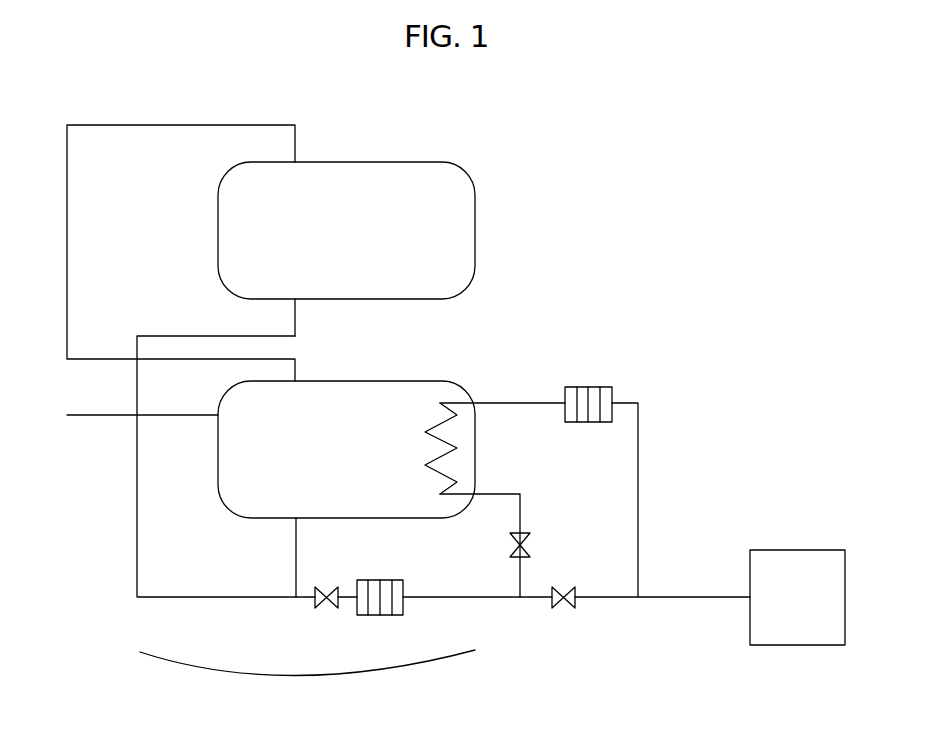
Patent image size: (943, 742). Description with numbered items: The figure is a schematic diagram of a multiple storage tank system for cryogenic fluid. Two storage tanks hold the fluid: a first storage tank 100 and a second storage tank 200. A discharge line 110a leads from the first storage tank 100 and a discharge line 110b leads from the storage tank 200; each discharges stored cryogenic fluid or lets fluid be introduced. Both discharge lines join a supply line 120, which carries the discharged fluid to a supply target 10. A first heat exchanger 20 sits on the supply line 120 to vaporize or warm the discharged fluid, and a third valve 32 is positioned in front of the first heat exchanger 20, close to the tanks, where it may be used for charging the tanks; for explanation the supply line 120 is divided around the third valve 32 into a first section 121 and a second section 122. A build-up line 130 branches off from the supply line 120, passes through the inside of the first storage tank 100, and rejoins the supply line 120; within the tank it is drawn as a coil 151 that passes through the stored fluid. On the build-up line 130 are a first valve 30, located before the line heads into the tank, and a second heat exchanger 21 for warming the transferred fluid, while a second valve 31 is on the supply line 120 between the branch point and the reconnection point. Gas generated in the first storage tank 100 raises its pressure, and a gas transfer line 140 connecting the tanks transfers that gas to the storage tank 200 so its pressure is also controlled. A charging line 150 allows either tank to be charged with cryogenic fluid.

The supply target 10 is at (795, 550).
The first heat exchanger 20 is at (392, 615).
The second heat exchanger 21 is at (598, 387).
The first valve 30 is at (520, 545).
The second valve 31 is at (553, 604).
The third valve 32 is at (316, 600).
The first storage tank 100 is at (443, 381).
The discharge line 110a is at (297, 553).
The discharge line 110b is at (296, 316).
The supply line 120 is at (287, 683).
The first section 121 is at (180, 597).
The second section 122 is at (495, 597).
The build-up line 130 is at (500, 494).
The gas transfer line 140 is at (67, 240).
The charging line 150 is at (93, 415).
The heat exchange coil 151 is at (457, 432).
The storage tank 200 is at (443, 162).